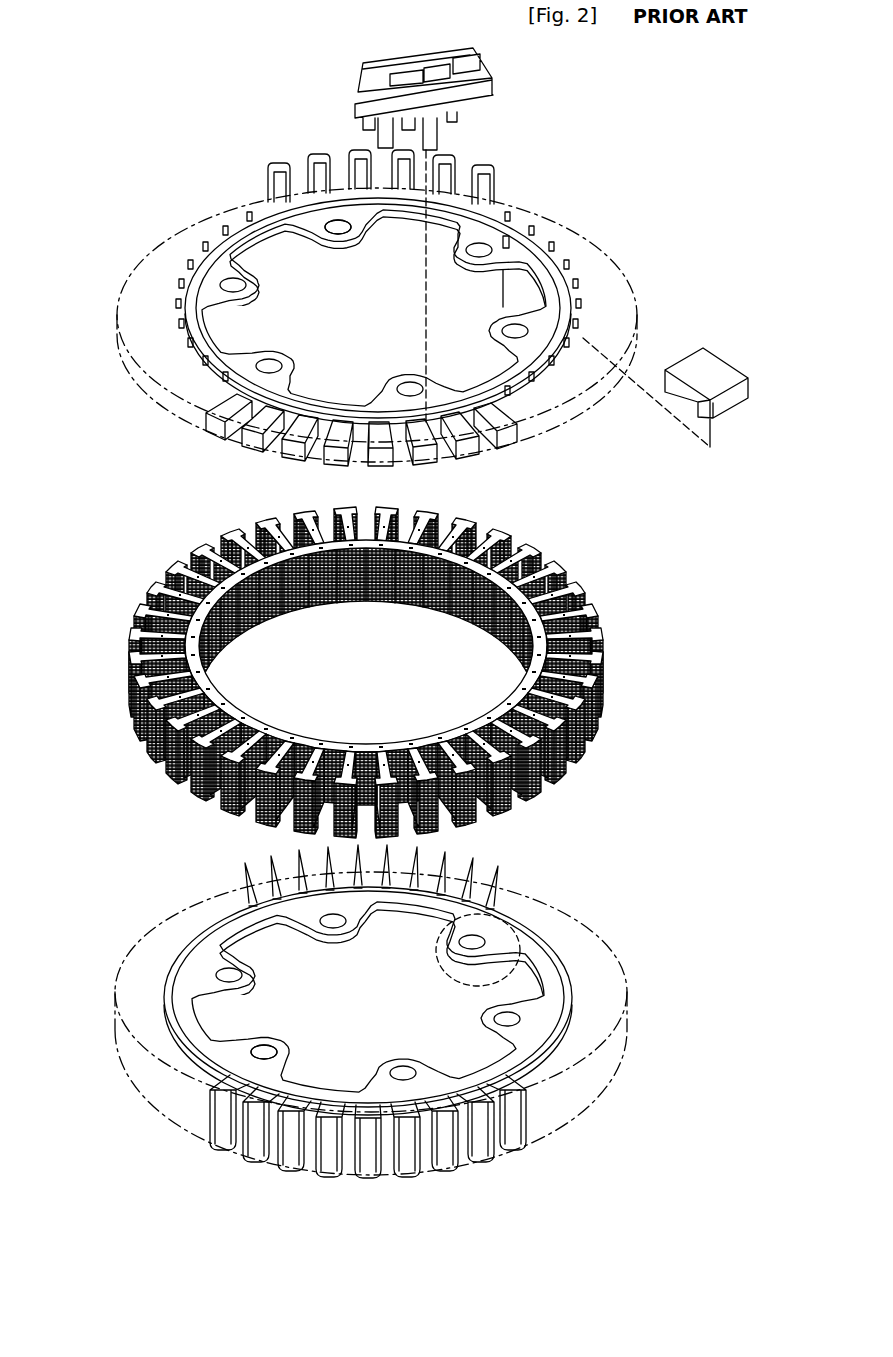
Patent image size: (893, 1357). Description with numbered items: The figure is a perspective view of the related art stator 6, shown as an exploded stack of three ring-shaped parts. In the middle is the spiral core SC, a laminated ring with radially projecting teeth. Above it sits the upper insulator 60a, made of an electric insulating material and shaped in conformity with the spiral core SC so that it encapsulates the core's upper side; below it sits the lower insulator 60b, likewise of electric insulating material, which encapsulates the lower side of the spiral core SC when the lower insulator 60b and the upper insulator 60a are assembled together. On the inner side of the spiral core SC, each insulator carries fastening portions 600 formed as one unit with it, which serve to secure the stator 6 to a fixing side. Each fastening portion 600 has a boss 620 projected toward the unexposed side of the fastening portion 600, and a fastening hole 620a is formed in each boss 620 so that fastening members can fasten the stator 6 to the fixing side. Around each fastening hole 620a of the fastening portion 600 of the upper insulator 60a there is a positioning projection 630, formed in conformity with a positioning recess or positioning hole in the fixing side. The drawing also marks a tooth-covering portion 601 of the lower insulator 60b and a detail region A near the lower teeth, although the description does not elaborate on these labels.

The stator 6 is at (93, 130).
The upper insulator 60a is at (625, 222).
The positioning projection 630 is at (506, 236).
The fastening hole 620a is at (360, 244).
The spiral core SC is at (622, 632).
The lower insulator 60b is at (590, 903).
The fastening portion 600 is at (440, 963).
The boss 620 is at (290, 1050).
The tooth insulating portion 601 is at (407, 1118).
The detail region A is at (432, 1122).